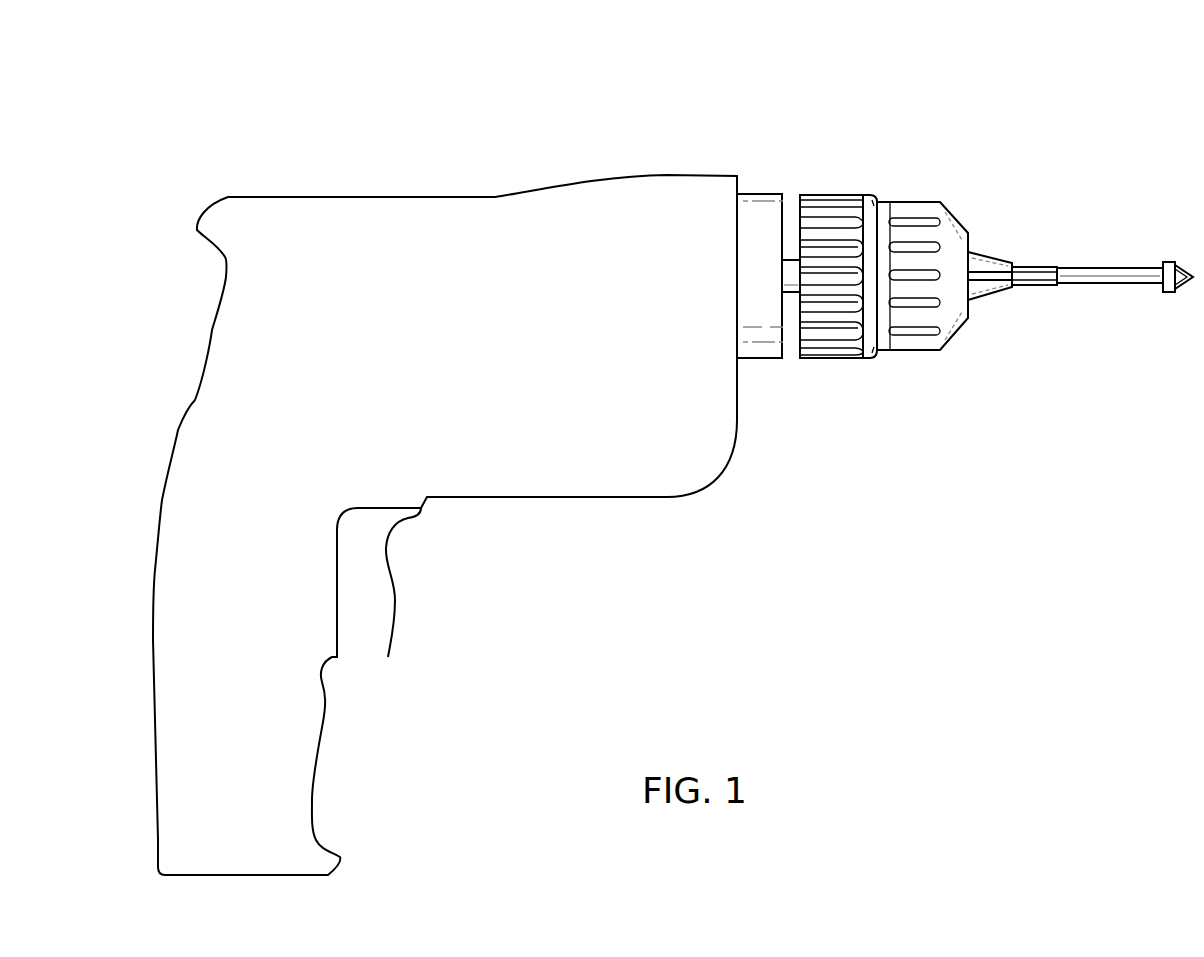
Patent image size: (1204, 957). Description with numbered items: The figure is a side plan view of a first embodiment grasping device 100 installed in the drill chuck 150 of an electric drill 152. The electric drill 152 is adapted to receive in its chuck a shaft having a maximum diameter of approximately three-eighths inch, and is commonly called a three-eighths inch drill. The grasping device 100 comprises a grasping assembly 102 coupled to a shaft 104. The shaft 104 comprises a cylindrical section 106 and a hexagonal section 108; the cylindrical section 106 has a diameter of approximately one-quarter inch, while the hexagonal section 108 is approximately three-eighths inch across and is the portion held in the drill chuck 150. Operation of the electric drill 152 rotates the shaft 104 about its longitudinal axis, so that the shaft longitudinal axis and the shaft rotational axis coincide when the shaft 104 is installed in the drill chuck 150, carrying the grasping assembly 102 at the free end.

The grasping device 100 is at (1110, 122).
The electric drill 152 is at (487, 137).
The drill chuck 150 is at (830, 360).
The shaft 104 is at (1078, 300).
The hexagonal section 108 is at (1028, 262).
The cylindrical section 106 is at (1103, 266).
The grasping assembly 102 is at (1197, 248).